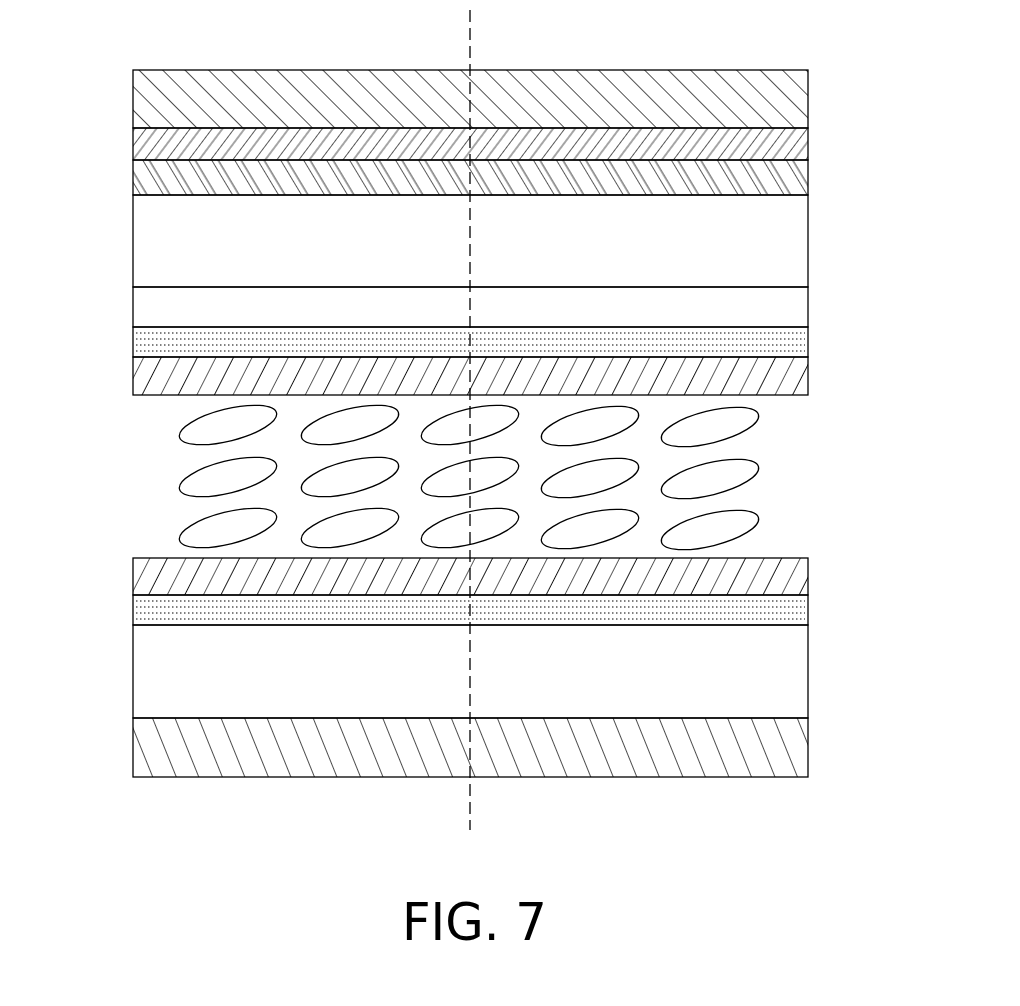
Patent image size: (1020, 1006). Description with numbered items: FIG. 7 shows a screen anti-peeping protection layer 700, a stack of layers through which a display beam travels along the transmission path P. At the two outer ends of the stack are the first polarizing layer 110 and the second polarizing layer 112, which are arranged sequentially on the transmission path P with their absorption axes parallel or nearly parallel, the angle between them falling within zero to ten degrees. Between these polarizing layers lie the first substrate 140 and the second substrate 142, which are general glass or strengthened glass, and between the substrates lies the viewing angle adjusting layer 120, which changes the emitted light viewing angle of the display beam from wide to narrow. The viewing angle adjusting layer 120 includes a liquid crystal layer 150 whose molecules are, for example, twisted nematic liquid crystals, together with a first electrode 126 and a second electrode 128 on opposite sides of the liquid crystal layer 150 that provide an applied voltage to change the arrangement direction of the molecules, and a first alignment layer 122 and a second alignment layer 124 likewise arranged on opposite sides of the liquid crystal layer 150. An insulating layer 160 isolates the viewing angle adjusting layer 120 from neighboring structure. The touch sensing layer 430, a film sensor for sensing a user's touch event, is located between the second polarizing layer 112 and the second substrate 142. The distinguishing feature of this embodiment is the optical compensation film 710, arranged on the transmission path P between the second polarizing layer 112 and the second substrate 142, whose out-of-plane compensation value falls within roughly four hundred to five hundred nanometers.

The first polarizing layer 110 is at (808, 745).
The second polarizing layer 112 is at (808, 97).
The viewing angle adjusting layer 120 is at (808, 327).
The first alignment layer 122 is at (133, 580).
The second alignment layer 124 is at (133, 377).
The first electrode 126 is at (133, 614).
The second electrode 128 is at (133, 345).
The first substrate 140 is at (808, 670).
The second substrate 142 is at (808, 237).
The liquid crystal layer 150 is at (125, 489).
The insulating layer 160 is at (808, 303).
The touch sensing layer 430 is at (808, 143).
The optical compensation film 710 is at (808, 178).
The screen anti-peeping protection layer 700 is at (806, 836).
The transmission path P is at (475, 17).